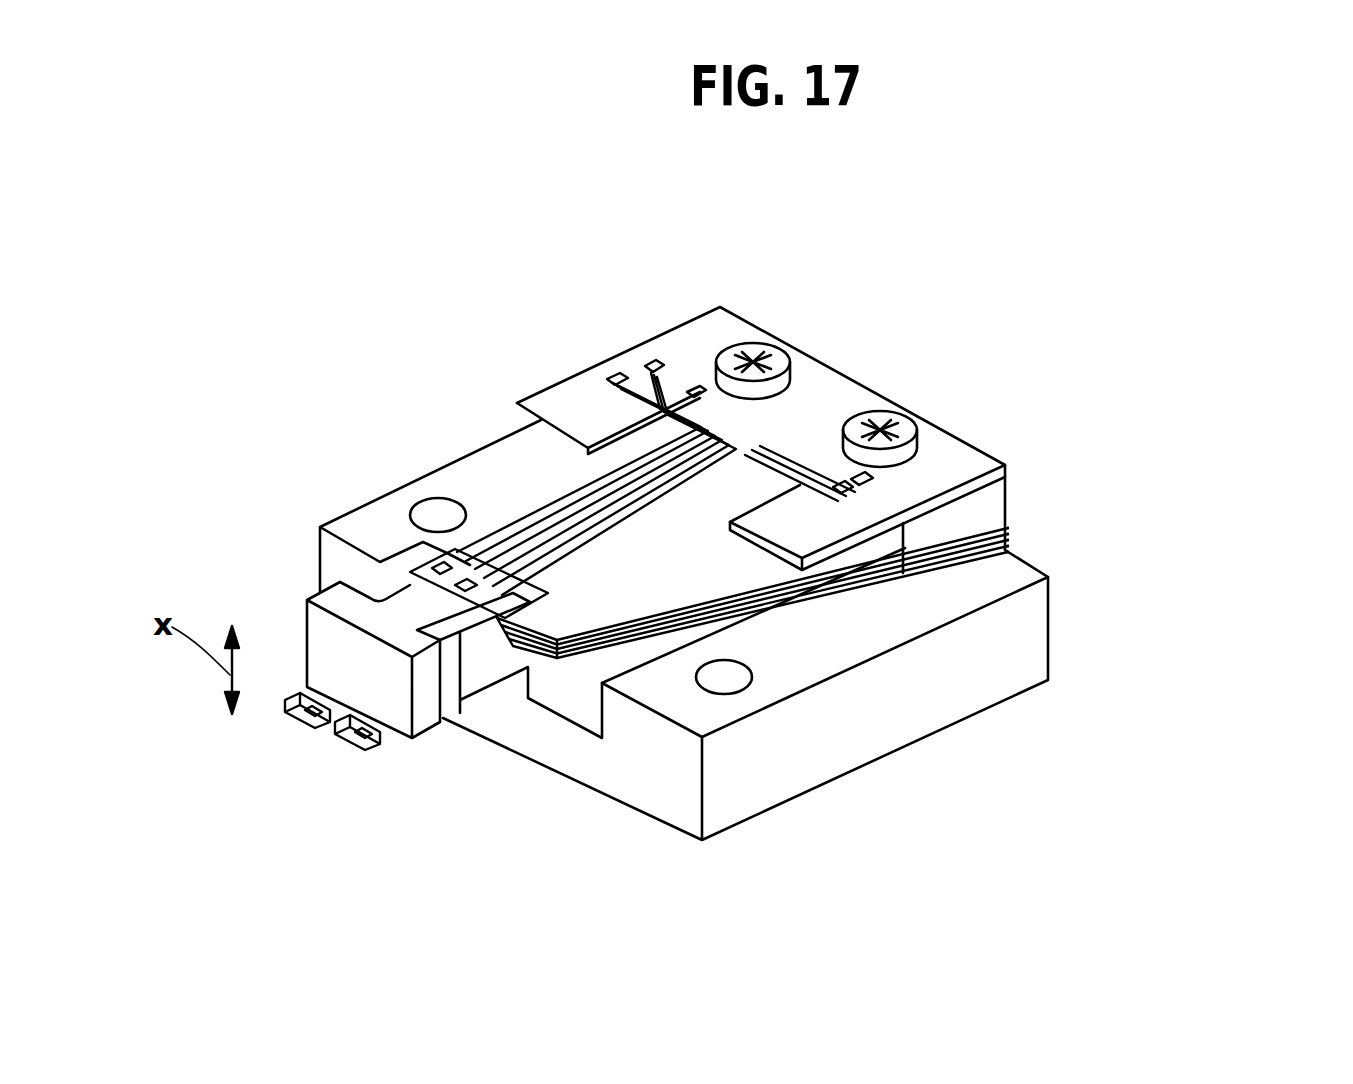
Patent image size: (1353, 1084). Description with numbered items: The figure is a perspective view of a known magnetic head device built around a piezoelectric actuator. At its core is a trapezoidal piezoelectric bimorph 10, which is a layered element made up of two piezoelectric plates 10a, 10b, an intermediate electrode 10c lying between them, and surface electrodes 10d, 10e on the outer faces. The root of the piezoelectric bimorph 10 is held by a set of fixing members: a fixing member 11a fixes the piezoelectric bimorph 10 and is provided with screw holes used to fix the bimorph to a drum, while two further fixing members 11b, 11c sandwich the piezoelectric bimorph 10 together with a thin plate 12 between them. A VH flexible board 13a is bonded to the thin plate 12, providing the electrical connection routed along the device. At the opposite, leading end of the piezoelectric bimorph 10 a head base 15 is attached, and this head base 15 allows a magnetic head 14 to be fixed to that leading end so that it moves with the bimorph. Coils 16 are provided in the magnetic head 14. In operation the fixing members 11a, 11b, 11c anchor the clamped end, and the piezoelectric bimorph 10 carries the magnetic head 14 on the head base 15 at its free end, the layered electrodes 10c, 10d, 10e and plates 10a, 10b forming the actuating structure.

The piezoelectric bimorph 10 is at (1217, 441).
The piezoelectric plate 10a is at (1008, 533).
The piezoelectric plate 10b is at (1008, 548).
The intermediate electrode 10c is at (1008, 541).
The surface electrode 10d is at (1008, 527).
The surface electrode 10e is at (1008, 553).
The fixing member 11a is at (803, 770).
The fixing member 11b is at (987, 507).
The fixing member 11c is at (668, 343).
The thin plate 12 is at (517, 537).
The VH flexible board 13a is at (487, 557).
The magnetic head 14 is at (300, 710).
The head base 15 is at (415, 725).
The coil 16 is at (322, 718).